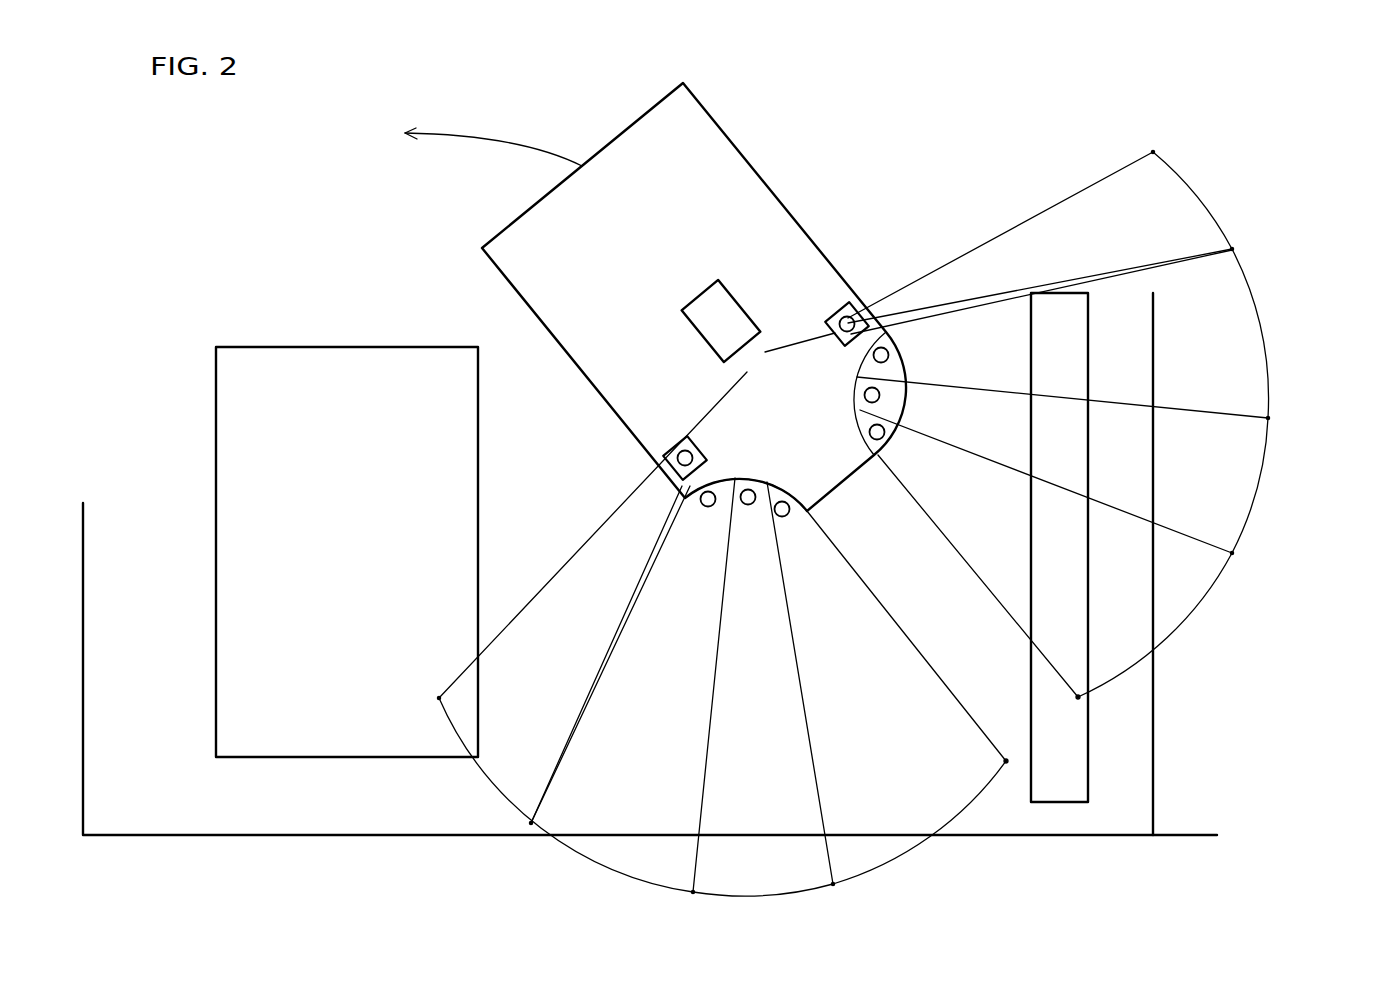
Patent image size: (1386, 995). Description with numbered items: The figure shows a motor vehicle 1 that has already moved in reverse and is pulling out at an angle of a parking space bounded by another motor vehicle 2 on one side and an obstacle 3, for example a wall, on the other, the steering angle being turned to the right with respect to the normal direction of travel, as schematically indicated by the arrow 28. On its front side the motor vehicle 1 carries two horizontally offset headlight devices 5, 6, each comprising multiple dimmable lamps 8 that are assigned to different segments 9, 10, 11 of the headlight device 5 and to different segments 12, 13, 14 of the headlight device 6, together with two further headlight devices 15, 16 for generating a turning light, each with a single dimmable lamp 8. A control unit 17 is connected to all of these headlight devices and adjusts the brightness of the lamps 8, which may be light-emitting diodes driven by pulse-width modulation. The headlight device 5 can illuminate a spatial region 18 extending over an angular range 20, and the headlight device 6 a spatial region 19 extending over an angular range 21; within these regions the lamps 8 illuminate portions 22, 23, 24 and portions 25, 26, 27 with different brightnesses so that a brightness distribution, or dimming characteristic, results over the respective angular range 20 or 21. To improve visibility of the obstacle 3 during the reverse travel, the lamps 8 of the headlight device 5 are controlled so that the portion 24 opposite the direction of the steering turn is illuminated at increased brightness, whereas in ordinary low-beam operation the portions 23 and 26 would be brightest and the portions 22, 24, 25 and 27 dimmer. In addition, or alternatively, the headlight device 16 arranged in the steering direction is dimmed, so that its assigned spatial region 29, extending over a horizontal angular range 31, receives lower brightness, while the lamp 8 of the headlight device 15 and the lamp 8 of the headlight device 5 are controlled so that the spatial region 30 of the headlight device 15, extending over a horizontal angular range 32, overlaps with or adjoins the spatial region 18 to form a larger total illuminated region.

The motor vehicle 1 is at (817, 242).
The other motor vehicle 2 is at (325, 343).
The obstacle 3 is at (1068, 777).
The headlight device 5 is at (853, 407).
The headlight device 6 is at (750, 478).
The dimmable lamp 8 is at (835, 333).
The segment 9 is at (862, 430).
The segment 10 is at (860, 392).
The segment 11 is at (870, 356).
The segment 12 is at (793, 492).
The segment 13 is at (767, 482).
The segment 14 is at (715, 478).
The headlight device 15 is at (857, 302).
The headlight device 16 is at (668, 452).
The control unit 17 is at (728, 290).
The spatial region 18 is at (1057, 673).
The spatial region 19 is at (922, 653).
The angular range 20 is at (1078, 697).
The angular range 21 is at (1005, 760).
The portion 22 is at (1195, 607).
The portion 23 is at (1260, 470).
The portion 24 is at (1255, 307).
The portion 25 is at (915, 849).
The portion 26 is at (755, 896).
The portion 27 is at (584, 856).
The arrow 28 is at (500, 127).
The spatial region 29 is at (580, 587).
The spatial region 30 is at (1088, 180).
The horizontal angular range 31 is at (488, 777).
The horizontal angular range 32 is at (1192, 188).